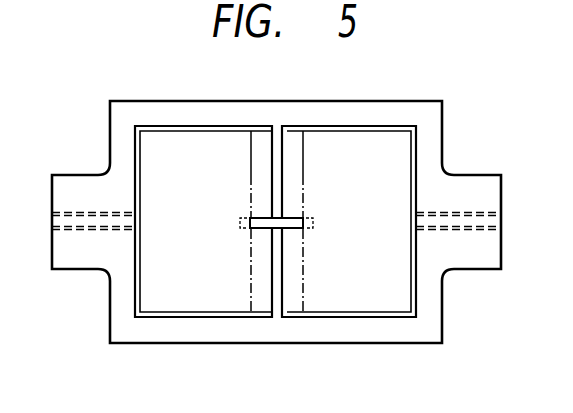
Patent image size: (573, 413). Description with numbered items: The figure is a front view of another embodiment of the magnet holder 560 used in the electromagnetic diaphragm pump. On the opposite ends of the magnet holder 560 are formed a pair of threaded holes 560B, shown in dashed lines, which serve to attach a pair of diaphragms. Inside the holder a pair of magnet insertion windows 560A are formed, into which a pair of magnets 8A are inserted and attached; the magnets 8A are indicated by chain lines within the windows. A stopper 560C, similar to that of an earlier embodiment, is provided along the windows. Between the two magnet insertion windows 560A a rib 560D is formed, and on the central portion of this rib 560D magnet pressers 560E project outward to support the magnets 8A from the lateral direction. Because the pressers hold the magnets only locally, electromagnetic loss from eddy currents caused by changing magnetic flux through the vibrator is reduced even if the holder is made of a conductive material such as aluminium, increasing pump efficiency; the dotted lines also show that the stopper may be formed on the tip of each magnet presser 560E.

The magnet holder 560 is at (370, 100).
The magnet insertion window 560A is at (141, 201).
The threaded hole 560B is at (87, 230).
The stopper 560C is at (143, 152).
The rib 560D is at (278, 277).
The magnet presser 560E is at (255, 228).
The magnet 8A is at (302, 300).